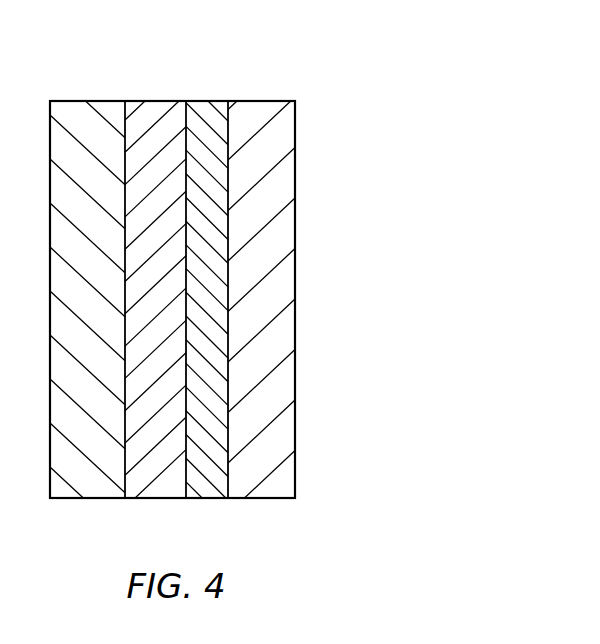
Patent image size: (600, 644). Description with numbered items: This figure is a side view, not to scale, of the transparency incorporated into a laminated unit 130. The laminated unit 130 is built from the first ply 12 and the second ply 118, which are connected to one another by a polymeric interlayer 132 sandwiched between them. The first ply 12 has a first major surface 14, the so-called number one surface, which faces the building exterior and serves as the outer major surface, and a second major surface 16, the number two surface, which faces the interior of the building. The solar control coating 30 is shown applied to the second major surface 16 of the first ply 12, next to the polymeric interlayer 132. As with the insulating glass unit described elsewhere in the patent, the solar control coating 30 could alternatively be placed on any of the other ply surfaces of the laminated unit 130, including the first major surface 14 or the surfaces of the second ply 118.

The first major surface 14 is at (296, 323).
The second ply 118 is at (83, 117).
The polymeric interlayer 132 is at (157, 113).
The solar control coating 30 is at (205, 113).
The first ply 12 is at (257, 117).
The second major surface 16 is at (224, 458).
The laminated unit 130 is at (392, 118).